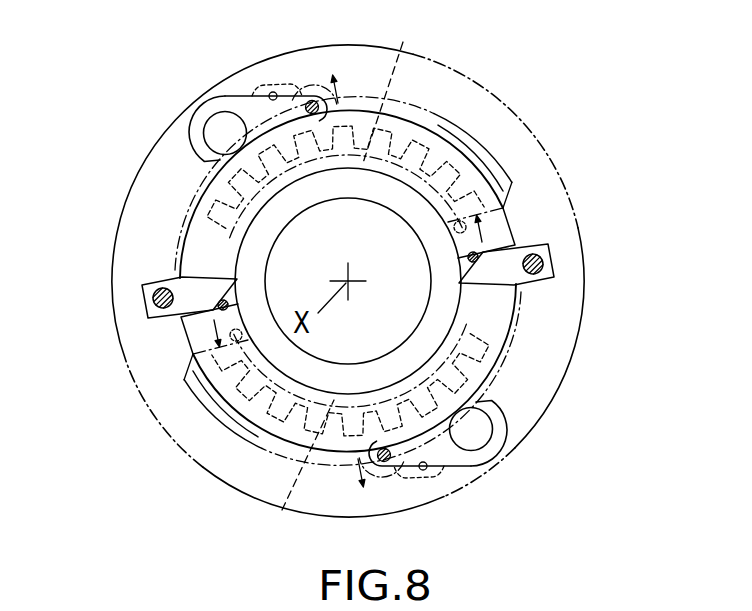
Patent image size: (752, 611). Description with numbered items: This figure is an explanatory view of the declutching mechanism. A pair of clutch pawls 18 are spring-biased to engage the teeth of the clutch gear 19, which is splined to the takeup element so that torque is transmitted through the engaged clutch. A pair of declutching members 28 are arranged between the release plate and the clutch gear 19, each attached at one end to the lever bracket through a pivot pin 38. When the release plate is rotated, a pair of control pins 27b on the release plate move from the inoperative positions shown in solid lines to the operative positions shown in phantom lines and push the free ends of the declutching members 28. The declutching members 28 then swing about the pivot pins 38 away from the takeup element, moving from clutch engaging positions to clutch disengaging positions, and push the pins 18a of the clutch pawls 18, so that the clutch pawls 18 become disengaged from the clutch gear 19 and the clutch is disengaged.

The clutch pawl 18 is at (252, 100).
The pin 18a is at (310, 102).
The clutch gear 19 is at (268, 517).
The declutching member 28 is at (430, 133).
The pivot pin 38 is at (543, 261).
The control pin 27b is at (462, 268).